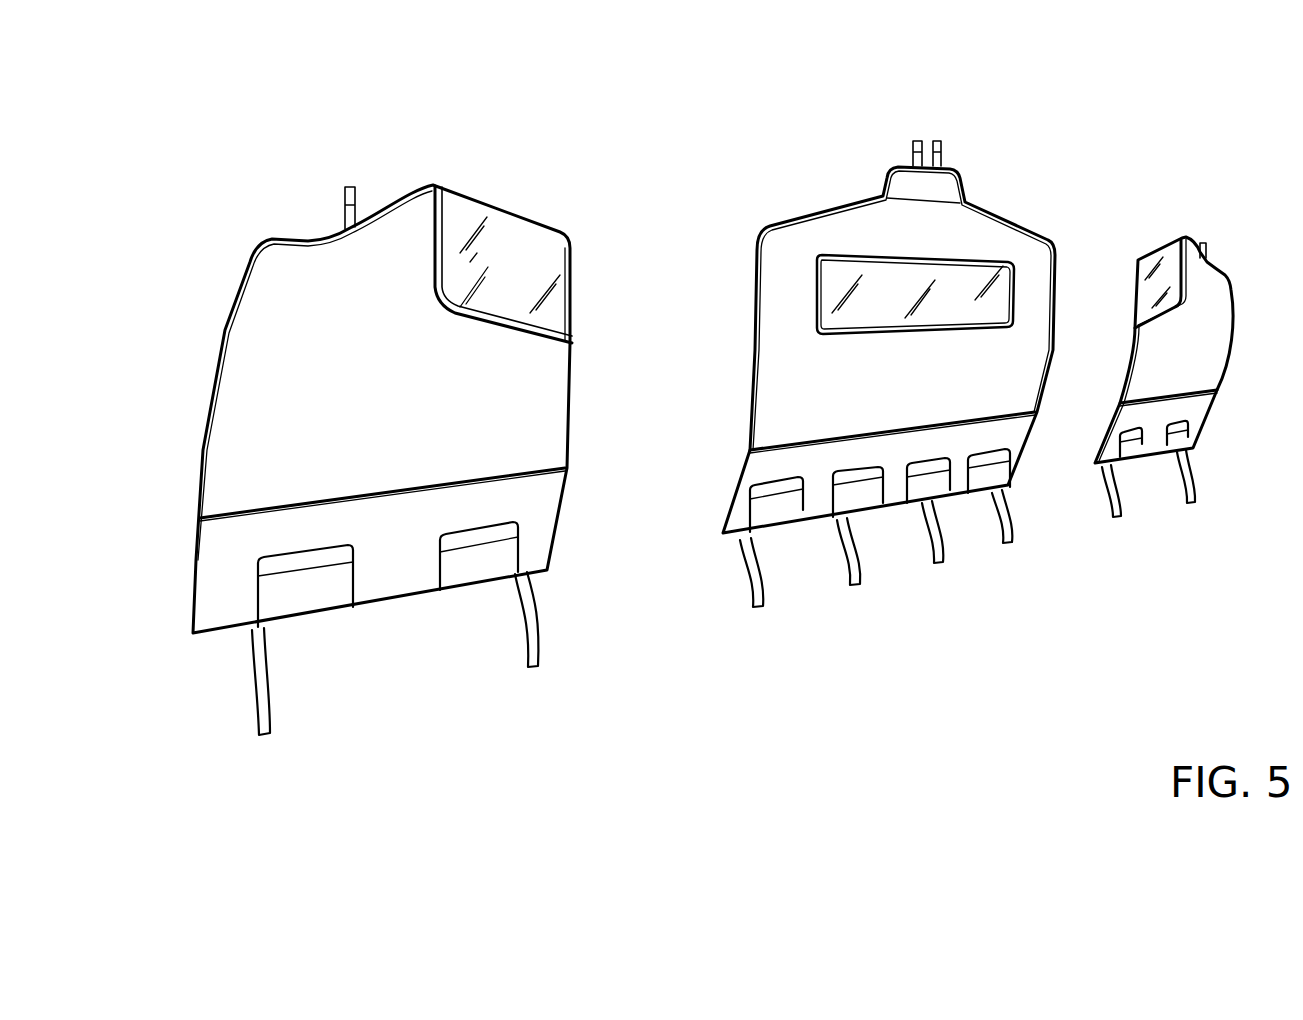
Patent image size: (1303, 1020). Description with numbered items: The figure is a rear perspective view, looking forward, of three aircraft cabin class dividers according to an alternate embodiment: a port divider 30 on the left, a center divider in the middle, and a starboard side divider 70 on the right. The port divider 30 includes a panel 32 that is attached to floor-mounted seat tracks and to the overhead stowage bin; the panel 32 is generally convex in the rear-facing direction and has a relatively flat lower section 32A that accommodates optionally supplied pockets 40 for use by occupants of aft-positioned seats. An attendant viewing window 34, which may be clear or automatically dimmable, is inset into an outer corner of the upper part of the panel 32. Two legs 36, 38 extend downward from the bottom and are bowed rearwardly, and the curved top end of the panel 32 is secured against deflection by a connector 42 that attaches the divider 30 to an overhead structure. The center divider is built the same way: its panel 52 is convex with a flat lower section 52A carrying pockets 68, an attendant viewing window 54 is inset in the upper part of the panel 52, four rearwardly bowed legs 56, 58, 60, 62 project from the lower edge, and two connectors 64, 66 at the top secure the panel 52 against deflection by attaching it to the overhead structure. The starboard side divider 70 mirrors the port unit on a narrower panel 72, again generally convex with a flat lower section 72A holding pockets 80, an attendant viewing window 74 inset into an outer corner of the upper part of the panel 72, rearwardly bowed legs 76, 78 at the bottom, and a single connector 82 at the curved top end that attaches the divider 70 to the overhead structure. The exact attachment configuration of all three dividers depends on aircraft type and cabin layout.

The port divider 30 is at (168, 310).
The panel 32 is at (223, 458).
The lower section 32A is at (185, 520).
The attendant viewing window 34 is at (517, 230).
The leg 36 is at (262, 692).
The leg 38 is at (527, 652).
The pockets 40 is at (470, 572).
The connector 42 is at (349, 186).
The panel 52 is at (778, 372).
The lower section 52A is at (722, 445).
The attendant viewing window 54 is at (888, 283).
The leg 56 is at (748, 586).
The leg 58 is at (750, 212).
The leg 60 is at (940, 558).
The leg 62 is at (1008, 544).
The connector 64 is at (915, 139).
The connector 66 is at (938, 139).
The pockets 68 is at (838, 503).
The starboard side divider 70 is at (1236, 303).
The panel 72 is at (1212, 355).
The lower section 72A is at (1230, 390).
The attendant viewing window 74 is at (1157, 260).
The leg 76 is at (1114, 521).
The leg 78 is at (1190, 506).
The pockets 80 is at (1127, 447).
The connector 82 is at (1202, 242).